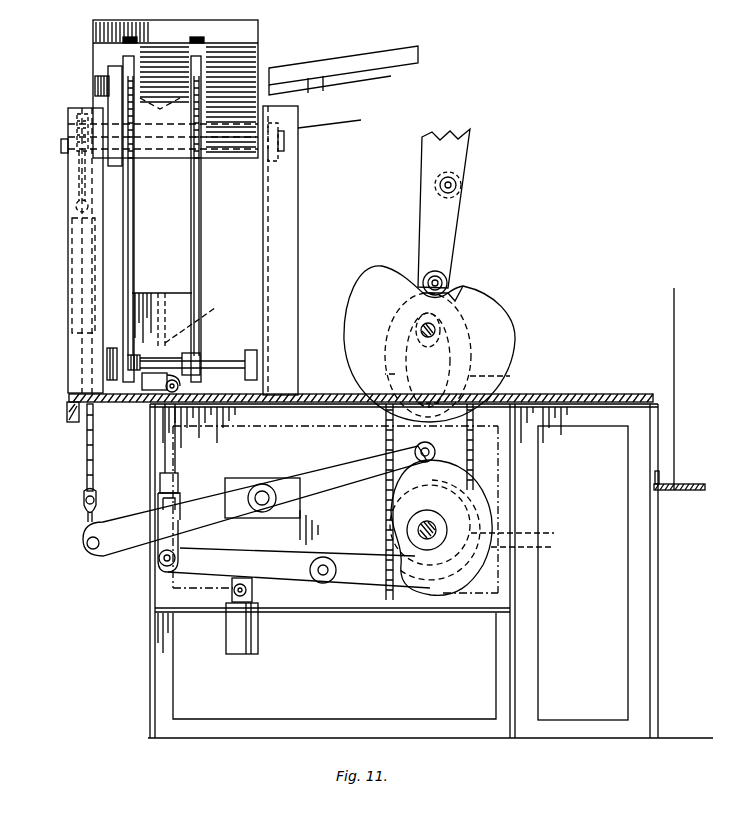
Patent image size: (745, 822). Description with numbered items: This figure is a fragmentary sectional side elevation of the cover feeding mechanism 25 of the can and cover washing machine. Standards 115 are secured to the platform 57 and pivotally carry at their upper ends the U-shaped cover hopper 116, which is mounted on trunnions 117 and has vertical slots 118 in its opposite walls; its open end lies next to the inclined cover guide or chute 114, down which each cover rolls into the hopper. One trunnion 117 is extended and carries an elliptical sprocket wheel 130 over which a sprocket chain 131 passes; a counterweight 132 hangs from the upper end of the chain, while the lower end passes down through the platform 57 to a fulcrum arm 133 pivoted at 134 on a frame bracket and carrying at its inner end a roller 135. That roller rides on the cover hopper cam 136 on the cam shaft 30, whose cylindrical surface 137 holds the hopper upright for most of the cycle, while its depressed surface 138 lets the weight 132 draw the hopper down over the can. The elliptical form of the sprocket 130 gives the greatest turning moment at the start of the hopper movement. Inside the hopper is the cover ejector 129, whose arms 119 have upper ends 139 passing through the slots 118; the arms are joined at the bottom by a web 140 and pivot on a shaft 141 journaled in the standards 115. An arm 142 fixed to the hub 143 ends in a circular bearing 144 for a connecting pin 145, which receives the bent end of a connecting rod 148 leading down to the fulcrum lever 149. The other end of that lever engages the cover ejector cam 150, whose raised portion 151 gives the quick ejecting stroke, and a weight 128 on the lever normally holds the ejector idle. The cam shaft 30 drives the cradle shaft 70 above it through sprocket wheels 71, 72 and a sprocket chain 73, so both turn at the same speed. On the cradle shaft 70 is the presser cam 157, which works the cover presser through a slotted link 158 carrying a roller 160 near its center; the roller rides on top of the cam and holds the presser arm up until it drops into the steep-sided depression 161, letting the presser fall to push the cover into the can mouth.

The feeding mechanism 25 is at (95, 68).
The cover hopper 116 is at (258, 48).
The vertical slots 118 is at (128, 58).
The cover guide or chute 114 is at (363, 48).
The upper ends of cover ejector arms 139 is at (194, 88).
The elliptical sprocket wheel 130 is at (68, 118).
The trunnions 117 is at (61, 139).
The cover ejector 129 is at (194, 178).
The cover ejector arms 119 is at (191, 197).
The standards 115 is at (68, 205).
The counterweight 132 is at (72, 278).
The web 140 is at (148, 300).
The arm 142 is at (150, 375).
The hub 143 is at (140, 355).
The shaft 141 is at (243, 351).
The platform 57 is at (68, 393).
The circular bearing 144 is at (137, 371).
The connecting pin 145 is at (180, 383).
The slotted link 158 is at (424, 229).
The roller 160 is at (440, 278).
The depression 161 is at (456, 297).
The sprocket wheel 71 is at (395, 313).
The cradle shaft 70 is at (436, 330).
The presser cam 157 is at (508, 352).
The sprocket chain 73 is at (451, 361).
The sprocket chain 131 is at (87, 465).
The connecting rod 148 is at (175, 460).
The pivot 134 is at (265, 480).
The fulcrum arm 133 is at (325, 458).
The roller 135 is at (438, 441).
The cover hopper cam 136 is at (398, 492).
The depressed surface 138 is at (380, 495).
The sprocket wheel 72 is at (448, 484).
The cam shaft 30 is at (418, 536).
The fulcrum lever 149 is at (285, 552).
The raised portion 151 is at (527, 533).
The cover ejector cam 150 is at (537, 547).
The cylindrical surface 137 is at (470, 570).
The weight 128 is at (255, 630).